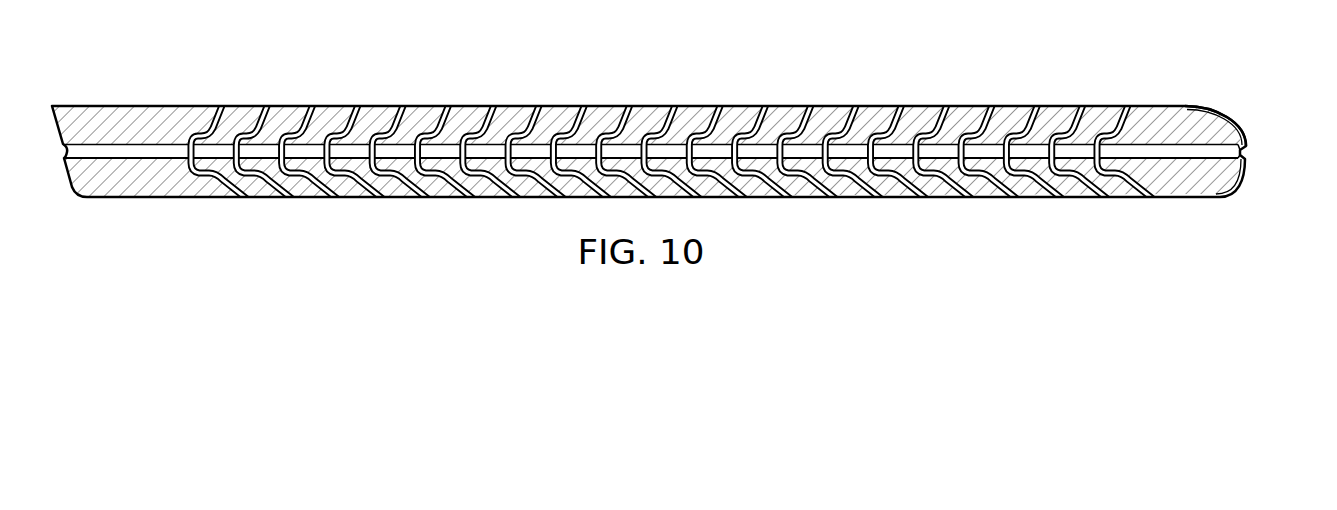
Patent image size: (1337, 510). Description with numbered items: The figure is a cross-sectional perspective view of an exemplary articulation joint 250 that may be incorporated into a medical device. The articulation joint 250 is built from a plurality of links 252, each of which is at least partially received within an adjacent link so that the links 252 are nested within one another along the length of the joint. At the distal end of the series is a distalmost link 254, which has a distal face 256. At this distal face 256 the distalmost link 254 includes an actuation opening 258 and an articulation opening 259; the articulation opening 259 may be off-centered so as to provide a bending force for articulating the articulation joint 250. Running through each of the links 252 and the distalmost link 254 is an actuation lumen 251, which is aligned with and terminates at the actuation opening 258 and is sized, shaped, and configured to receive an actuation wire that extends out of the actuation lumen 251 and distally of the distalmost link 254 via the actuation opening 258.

The articulation joint 250 is at (1060, 62).
The actuation lumen 251 is at (147, 150).
The links 252 is at (290, 113).
The distalmost link 254 is at (1167, 115).
The distal face 256 is at (1245, 172).
The actuation opening 258 is at (1243, 156).
The articulation opening 259 is at (1247, 142).